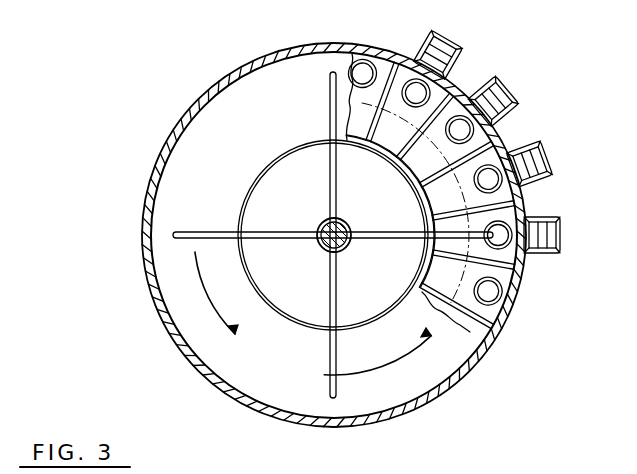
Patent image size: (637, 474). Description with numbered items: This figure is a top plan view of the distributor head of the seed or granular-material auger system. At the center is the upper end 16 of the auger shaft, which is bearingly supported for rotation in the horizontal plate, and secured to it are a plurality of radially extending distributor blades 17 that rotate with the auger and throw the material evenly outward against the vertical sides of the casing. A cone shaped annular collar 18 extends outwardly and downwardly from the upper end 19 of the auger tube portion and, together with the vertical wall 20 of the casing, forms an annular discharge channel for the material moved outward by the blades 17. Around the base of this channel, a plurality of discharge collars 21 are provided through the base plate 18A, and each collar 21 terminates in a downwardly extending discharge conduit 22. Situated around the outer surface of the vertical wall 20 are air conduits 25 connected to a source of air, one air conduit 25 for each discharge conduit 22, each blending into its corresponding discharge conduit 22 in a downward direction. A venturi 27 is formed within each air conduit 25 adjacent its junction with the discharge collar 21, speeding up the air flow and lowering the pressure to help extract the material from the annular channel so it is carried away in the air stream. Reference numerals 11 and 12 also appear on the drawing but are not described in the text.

The shaft 11 is at (327, 252).
The inner drum 12 is at (272, 188).
The upper end of the auger shaft 16 is at (318, 245).
The distributor blades 17 is at (222, 231).
The cone shaped annular collar 18 is at (427, 164).
The base plate 18A is at (492, 313).
The upper end of the auger tube portion 19 is at (418, 187).
The vertical wall 20 is at (512, 316).
The discharge collars 21 is at (483, 180).
The discharge conduit 22 is at (495, 157).
The air conduits 25 is at (556, 168).
The venturi 27 is at (452, 42).